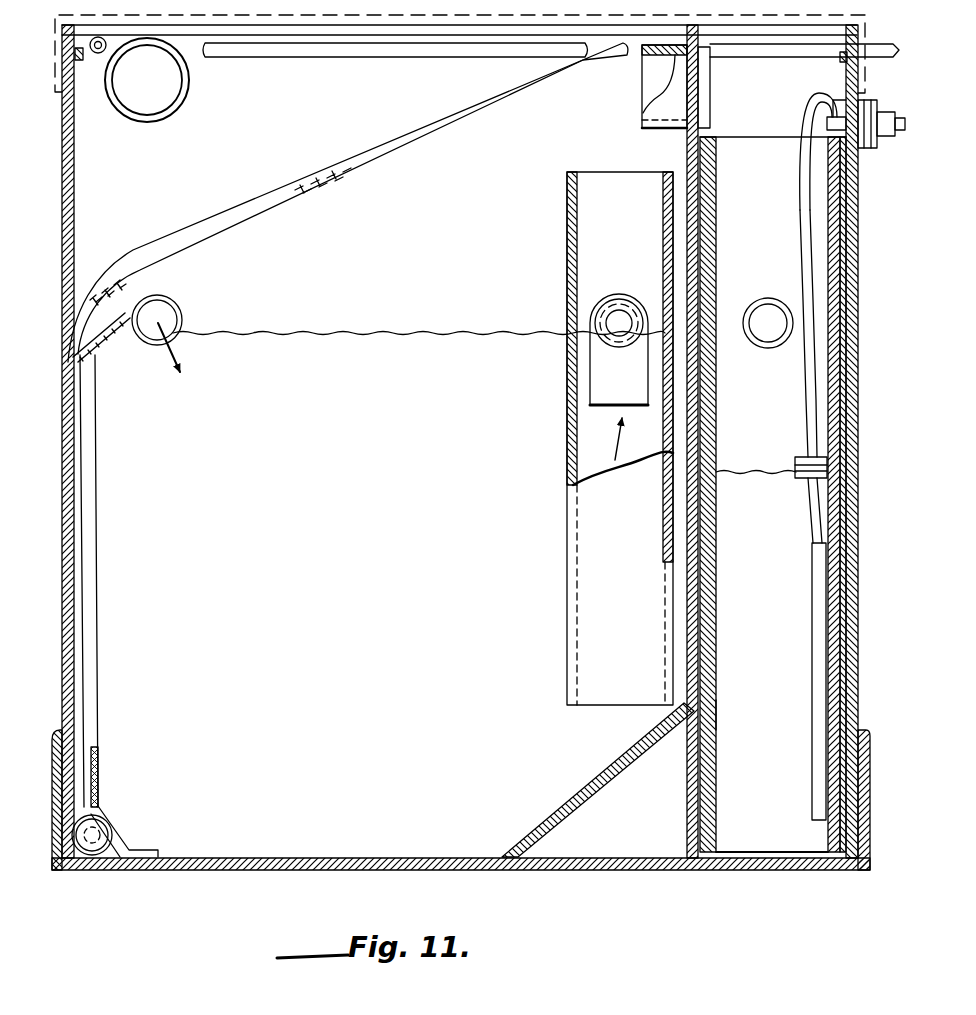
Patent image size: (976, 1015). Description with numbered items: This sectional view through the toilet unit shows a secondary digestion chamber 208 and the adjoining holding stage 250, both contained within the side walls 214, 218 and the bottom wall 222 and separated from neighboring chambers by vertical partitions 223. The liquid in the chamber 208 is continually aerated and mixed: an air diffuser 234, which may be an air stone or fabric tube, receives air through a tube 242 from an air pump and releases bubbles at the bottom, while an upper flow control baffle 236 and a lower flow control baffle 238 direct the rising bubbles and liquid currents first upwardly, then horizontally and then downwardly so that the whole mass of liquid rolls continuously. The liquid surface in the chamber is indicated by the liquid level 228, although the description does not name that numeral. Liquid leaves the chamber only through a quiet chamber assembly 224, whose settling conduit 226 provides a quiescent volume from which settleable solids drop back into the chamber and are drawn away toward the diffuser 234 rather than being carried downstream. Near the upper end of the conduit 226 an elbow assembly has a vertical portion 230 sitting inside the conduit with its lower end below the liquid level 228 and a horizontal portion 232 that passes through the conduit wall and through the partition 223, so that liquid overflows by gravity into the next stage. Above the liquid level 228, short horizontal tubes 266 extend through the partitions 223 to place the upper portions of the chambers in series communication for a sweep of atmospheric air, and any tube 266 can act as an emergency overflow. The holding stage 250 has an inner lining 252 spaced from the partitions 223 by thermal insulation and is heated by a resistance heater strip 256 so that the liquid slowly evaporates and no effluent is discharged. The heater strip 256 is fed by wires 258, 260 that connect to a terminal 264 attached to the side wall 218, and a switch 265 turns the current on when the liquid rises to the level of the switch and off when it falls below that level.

The secondary digestion chamber 208 is at (380, 490).
The side wall 214 is at (43, 262).
The side wall 218 is at (893, 378).
The bottom wall 222 is at (130, 872).
The vertical partition 223 is at (690, 150).
The quiet chamber assembly 224 is at (597, 152).
The settling conduit 226 is at (567, 272).
The liquid level 228 is at (405, 332).
The vertical portion 230 is at (590, 385).
The horizontal portion 232 is at (175, 298).
The air diffuser 234 is at (118, 845).
The upper flow control baffle 236 is at (103, 338).
The lower flow control baffle 238 is at (570, 800).
The tube 242 is at (397, 143).
The holding stage 250 is at (800, 585).
The inner lining 252 is at (716, 715).
The resistance heater strip 256 is at (812, 628).
The wire 258 is at (800, 165).
The wire 260 is at (818, 190).
The terminal 264 is at (887, 148).
The switch 265 is at (800, 457).
The horizontal tube 266 is at (150, 122).